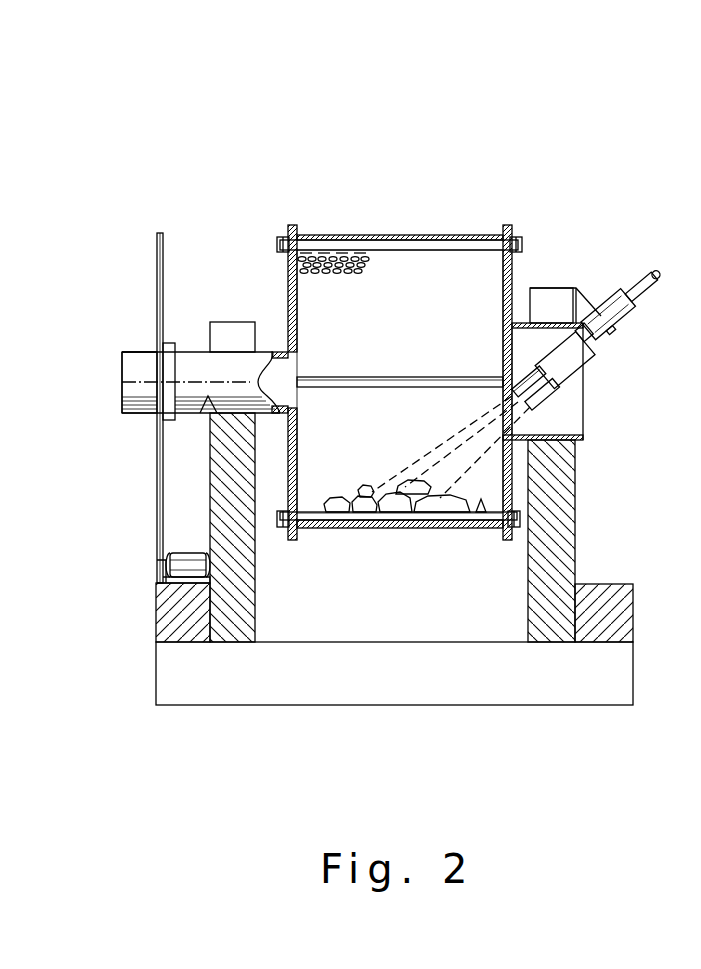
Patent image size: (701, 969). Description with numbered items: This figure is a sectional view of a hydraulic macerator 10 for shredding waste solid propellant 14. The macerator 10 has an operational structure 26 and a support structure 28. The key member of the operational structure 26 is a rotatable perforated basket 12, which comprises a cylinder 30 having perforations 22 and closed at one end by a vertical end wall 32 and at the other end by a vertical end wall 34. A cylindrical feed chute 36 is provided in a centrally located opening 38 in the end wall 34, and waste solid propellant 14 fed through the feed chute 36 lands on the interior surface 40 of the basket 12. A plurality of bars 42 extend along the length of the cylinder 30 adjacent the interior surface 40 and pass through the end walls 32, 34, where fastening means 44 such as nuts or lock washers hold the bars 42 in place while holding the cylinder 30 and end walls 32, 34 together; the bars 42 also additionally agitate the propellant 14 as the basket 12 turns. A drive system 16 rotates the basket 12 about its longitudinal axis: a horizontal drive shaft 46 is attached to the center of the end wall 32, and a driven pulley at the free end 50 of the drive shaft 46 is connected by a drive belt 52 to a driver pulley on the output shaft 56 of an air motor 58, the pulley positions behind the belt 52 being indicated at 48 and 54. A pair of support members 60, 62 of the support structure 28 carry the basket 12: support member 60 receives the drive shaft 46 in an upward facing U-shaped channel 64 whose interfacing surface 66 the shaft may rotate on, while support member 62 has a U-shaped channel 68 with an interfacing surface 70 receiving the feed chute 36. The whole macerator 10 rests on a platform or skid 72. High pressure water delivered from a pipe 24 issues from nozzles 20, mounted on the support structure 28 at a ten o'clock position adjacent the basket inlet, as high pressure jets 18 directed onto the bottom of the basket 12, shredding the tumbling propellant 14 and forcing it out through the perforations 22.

The hydraulic macerator 10 is at (391, 212).
The perforated basket 12 is at (409, 333).
The waste solid propellant 14 is at (367, 494).
The drive system 16 is at (136, 340).
The high pressure jets 18 is at (462, 430).
The nozzles 20 is at (534, 398).
The perforations 22 is at (323, 256).
The pipe 24 is at (645, 297).
The operational structure 26 is at (357, 530).
The support structure 28 is at (222, 322).
The cylinder 30 is at (434, 237).
The vertical end wall 32 is at (290, 287).
The vertical end wall 34 is at (513, 265).
The cylindrical feed chute 36 is at (584, 413).
The opening 38 is at (503, 322).
The interior surface 40 is at (477, 514).
The bars 42 is at (451, 246).
The fastening means 44 is at (282, 240).
The horizontal drive shaft 46 is at (199, 351).
The driven pulley location 48 is at (163, 488).
The free end 50 is at (122, 385).
The drive belt 52 is at (156, 464).
The driver pulley location 54 is at (157, 563).
The output shaft 56 is at (165, 571).
The air motor 58 is at (190, 553).
The support member 60 is at (250, 608).
The support member 62 is at (540, 594).
The U-shaped channel 64 is at (240, 346).
The interfacing surface 66 is at (205, 411).
The U-shaped channel 68 is at (558, 292).
The interfacing surface 70 is at (590, 437).
The platform or skid 72 is at (378, 641).